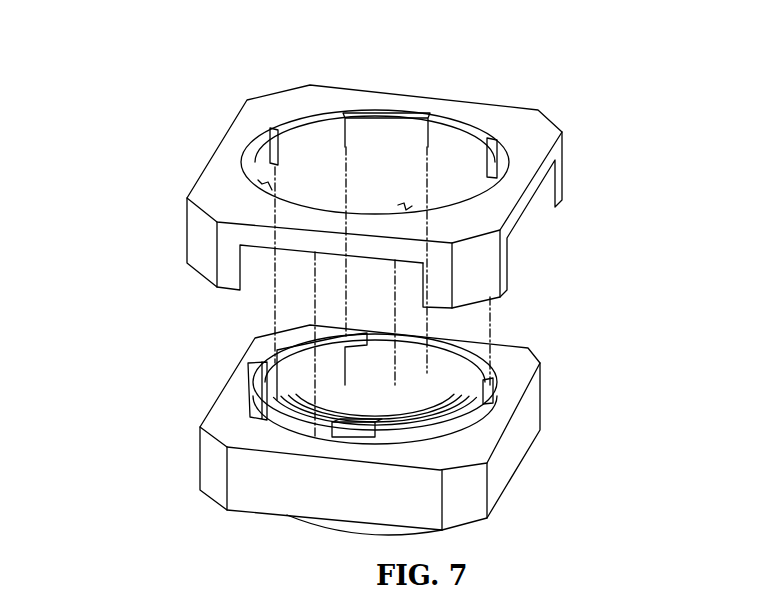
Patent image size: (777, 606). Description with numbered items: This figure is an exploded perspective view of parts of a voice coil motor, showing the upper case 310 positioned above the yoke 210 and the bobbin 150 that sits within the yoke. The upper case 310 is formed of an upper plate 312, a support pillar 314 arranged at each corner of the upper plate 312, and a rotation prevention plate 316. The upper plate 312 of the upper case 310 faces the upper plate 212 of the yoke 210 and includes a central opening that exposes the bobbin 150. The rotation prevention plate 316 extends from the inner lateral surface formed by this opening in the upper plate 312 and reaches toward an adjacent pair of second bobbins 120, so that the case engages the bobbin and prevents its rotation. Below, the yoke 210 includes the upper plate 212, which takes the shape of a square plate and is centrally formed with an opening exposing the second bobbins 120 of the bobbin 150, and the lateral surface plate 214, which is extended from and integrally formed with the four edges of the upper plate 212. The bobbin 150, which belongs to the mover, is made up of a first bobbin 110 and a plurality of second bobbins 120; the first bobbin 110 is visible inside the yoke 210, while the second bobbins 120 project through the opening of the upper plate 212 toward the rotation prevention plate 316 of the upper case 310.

The upper case 310 is at (358, 159).
The upper plate 312 is at (510, 127).
The support pillar 314 is at (200, 248).
The rotation prevention plate 316 is at (310, 132).
The yoke 210 is at (402, 413).
The upper plate 212 is at (233, 405).
The lateral surface plate 214 is at (527, 428).
The bobbin 150 is at (461, 364).
The second bobbin 120 is at (407, 363).
The first bobbin 110 is at (470, 405).